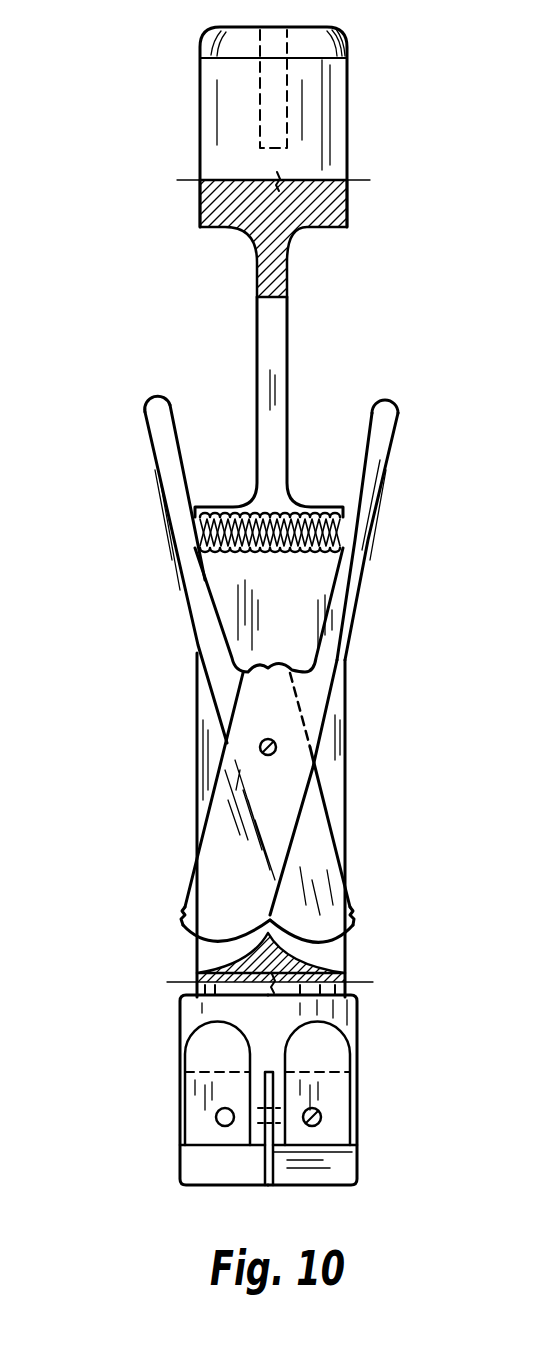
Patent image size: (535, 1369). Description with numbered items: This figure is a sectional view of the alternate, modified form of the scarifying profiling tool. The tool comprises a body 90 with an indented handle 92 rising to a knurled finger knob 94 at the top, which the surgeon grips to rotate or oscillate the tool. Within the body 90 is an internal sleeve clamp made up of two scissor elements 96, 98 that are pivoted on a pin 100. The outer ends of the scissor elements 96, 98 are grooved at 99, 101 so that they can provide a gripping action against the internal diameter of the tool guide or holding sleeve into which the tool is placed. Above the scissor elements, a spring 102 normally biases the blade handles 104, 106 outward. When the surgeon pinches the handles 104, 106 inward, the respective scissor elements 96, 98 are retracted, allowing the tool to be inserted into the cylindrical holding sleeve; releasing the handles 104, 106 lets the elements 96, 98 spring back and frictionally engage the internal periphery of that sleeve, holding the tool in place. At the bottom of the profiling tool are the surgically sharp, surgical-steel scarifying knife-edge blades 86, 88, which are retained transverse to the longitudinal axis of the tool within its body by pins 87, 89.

The knurled finger knob 94 is at (333, 76).
The indented handle 92 is at (289, 338).
The spring 102 is at (340, 521).
The body 90 is at (347, 716).
The blade handle 104 is at (155, 432).
The blade handle 106 is at (380, 433).
The scissor element 98 is at (210, 877).
The scissor element 96 is at (318, 877).
The grooved outer end 101 is at (182, 925).
The grooved outer end 99 is at (357, 925).
The pin 100 is at (276, 750).
The scarifying knife-edge blade 88 is at (262, 1157).
The scarifying knife-edge blade 86 is at (340, 1165).
The pin 89 is at (218, 1112).
The pin 87 is at (320, 1112).